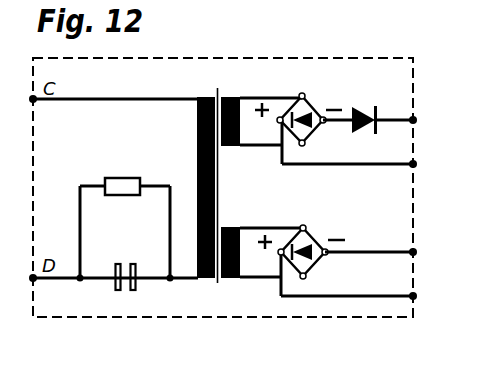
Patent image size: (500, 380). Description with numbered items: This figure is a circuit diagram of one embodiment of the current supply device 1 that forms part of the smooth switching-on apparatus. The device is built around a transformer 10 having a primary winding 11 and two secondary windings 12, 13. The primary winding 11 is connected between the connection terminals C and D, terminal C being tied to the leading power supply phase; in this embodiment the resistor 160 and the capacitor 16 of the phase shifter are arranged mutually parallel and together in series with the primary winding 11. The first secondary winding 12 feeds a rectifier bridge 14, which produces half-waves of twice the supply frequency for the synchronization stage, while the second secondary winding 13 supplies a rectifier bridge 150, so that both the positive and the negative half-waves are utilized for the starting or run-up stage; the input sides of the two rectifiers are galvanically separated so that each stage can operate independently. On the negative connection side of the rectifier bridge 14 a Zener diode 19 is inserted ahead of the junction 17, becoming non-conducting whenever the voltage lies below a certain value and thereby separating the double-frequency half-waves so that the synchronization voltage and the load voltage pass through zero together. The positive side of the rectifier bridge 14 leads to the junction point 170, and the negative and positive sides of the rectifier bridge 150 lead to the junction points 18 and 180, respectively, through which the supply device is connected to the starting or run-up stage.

The current supply device 1 is at (395, 304).
The transformer 10 is at (219, 88).
The primary winding 11 is at (207, 97).
The secondary winding 12 is at (236, 97).
The secondary winding 13 is at (230, 281).
The rectifier bridge 14 is at (305, 94).
The rectifier bridge 150 is at (303, 263).
The capacitor 16 is at (133, 291).
The resistor 160 is at (122, 188).
The junction 17 is at (413, 120).
The junction point 170 is at (413, 164).
The junction point 18 is at (413, 252).
The junction point 180 is at (413, 296).
The Zener diode 19 is at (374, 104).